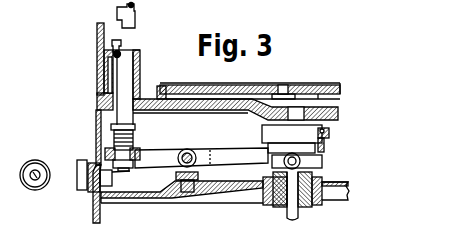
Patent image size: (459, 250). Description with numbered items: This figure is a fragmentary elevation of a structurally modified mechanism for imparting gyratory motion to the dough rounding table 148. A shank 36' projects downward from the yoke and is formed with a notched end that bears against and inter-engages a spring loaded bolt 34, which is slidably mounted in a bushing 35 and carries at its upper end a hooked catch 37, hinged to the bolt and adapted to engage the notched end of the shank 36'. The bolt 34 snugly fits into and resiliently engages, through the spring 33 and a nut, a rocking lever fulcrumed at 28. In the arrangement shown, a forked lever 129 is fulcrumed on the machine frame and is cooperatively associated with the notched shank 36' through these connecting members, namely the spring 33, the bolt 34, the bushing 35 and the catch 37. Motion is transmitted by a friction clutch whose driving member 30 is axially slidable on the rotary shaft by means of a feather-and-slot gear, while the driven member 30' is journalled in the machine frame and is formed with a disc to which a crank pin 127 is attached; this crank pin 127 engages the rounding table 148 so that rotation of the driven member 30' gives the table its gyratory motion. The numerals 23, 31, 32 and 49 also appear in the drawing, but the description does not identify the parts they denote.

The housing 23 is at (234, 101).
The fulcrum of rocking lever 28 is at (186, 150).
The driving member of friction clutch 30 is at (313, 149).
The driven member of friction clutch 30' is at (340, 140).
The bearing block 31 is at (91, 189).
The pin 32 is at (82, 173).
The spring 33 is at (111, 132).
The bolt 34 is at (98, 70).
The bushing 35 is at (99, 85).
The shank 36' is at (95, 14).
The hooked catch 37 is at (106, 43).
The cover plate 49 is at (340, 88).
The crank pin 127 is at (284, 87).
The forked lever 129 is at (224, 158).
The rounding table 148 is at (338, 99).